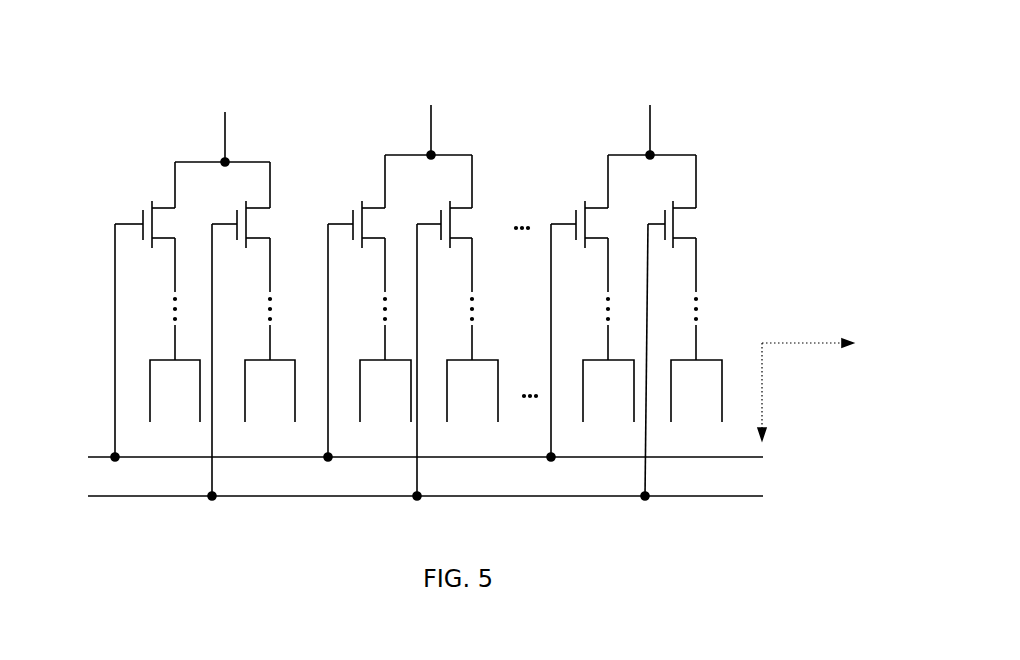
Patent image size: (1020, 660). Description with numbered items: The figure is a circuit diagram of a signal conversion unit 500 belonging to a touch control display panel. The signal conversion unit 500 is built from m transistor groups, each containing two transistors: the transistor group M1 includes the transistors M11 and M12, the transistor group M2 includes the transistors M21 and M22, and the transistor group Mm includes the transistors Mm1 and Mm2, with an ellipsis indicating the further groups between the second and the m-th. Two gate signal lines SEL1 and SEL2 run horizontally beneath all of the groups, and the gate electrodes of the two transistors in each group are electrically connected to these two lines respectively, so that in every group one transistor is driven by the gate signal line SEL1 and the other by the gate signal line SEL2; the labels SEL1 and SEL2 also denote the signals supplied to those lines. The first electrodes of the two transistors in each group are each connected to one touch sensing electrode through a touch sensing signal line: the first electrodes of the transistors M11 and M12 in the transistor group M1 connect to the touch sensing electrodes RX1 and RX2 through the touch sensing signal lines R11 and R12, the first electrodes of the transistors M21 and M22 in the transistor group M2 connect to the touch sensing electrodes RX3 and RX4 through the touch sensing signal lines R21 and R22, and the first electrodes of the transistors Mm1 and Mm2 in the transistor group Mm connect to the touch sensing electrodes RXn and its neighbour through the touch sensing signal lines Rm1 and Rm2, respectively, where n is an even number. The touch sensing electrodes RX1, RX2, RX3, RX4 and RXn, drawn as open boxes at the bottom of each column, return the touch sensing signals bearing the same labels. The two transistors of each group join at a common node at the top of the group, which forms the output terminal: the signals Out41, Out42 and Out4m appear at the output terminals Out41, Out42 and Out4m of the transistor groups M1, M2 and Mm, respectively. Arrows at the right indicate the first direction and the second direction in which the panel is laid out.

The signal conversion unit 500 is at (732, 40).
The gate signal line SEL1 is at (399, 458).
The gate signal line SEL2 is at (399, 497).
The transistor group M1 is at (255, 174).
The transistor group M2 is at (343, 170).
The transistor group Mm is at (688, 168).
The output terminal Out41 is at (224, 127).
The output terminal Out42 is at (430, 123).
The output terminal Out4m is at (650, 123).
The transistor M11 is at (143, 321).
The transistor M12 is at (239, 341).
The transistor M21 is at (354, 320).
The transistor M22 is at (442, 340).
The transistor Mm1 is at (577, 320).
The transistor Mm2 is at (668, 340).
The touch sensing signal line R11 is at (159, 299).
The touch sensing signal line R12 is at (253, 299).
The touch sensing signal line R21 is at (370, 299).
The touch sensing signal line R22 is at (456, 299).
The touch sensing signal line Rm1 is at (590, 299).
The touch sensing signal line Rm2 is at (678, 299).
The touch sensing electrode RX1 is at (175, 391).
The touch sensing electrode RX2 is at (270, 391).
The touch sensing electrode RX3 is at (385, 391).
The touch sensing electrode RX4 is at (472, 391).
The touch sensing electrode RXn is at (696, 391).